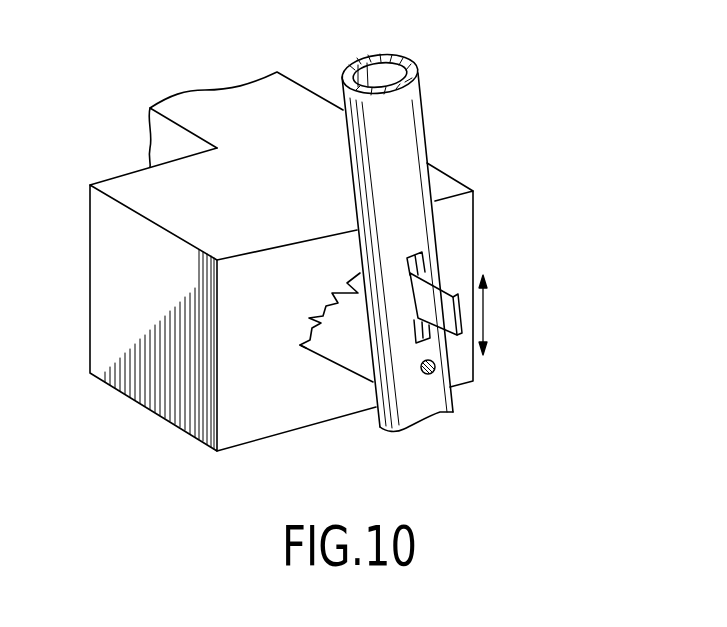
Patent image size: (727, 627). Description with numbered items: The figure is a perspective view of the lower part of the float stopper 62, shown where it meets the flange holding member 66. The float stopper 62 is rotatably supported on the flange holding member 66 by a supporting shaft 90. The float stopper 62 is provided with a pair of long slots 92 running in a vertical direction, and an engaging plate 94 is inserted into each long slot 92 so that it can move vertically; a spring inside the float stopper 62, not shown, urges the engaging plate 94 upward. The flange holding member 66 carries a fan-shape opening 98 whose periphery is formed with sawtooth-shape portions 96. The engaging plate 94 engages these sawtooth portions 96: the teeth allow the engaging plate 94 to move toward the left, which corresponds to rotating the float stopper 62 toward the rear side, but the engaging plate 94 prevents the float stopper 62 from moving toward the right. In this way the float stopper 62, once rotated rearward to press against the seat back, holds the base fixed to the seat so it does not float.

The float stopper 62 is at (407, 105).
The flange holding member 66 is at (297, 100).
The supporting shaft 90 is at (436, 369).
The long slot 92 is at (423, 262).
The engaging plate 94 is at (462, 291).
The sawtooth-shape portion 96 is at (322, 312).
The fan-shape opening 98 is at (343, 360).